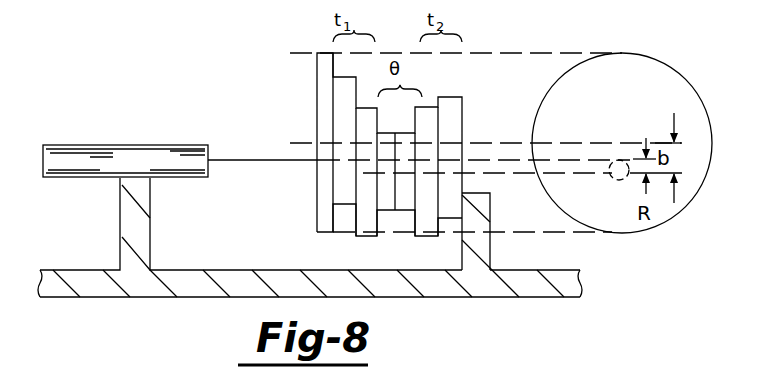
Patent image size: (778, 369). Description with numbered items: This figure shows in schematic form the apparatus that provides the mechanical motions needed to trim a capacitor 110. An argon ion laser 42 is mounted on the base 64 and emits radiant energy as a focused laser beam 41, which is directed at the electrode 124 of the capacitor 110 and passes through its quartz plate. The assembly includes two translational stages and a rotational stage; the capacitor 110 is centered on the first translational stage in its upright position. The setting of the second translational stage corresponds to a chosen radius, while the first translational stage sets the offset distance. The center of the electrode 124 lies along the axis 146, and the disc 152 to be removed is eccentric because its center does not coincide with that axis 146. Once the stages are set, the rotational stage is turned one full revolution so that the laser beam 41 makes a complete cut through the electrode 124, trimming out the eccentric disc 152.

The laser beam 41 is at (249, 158).
The laser 42 is at (152, 123).
The base 64 is at (207, 266).
The capacitor 110 is at (672, 21).
The electrode 124 is at (607, 95).
The axis 146 is at (624, 142).
The eccentric disc 152 is at (617, 181).